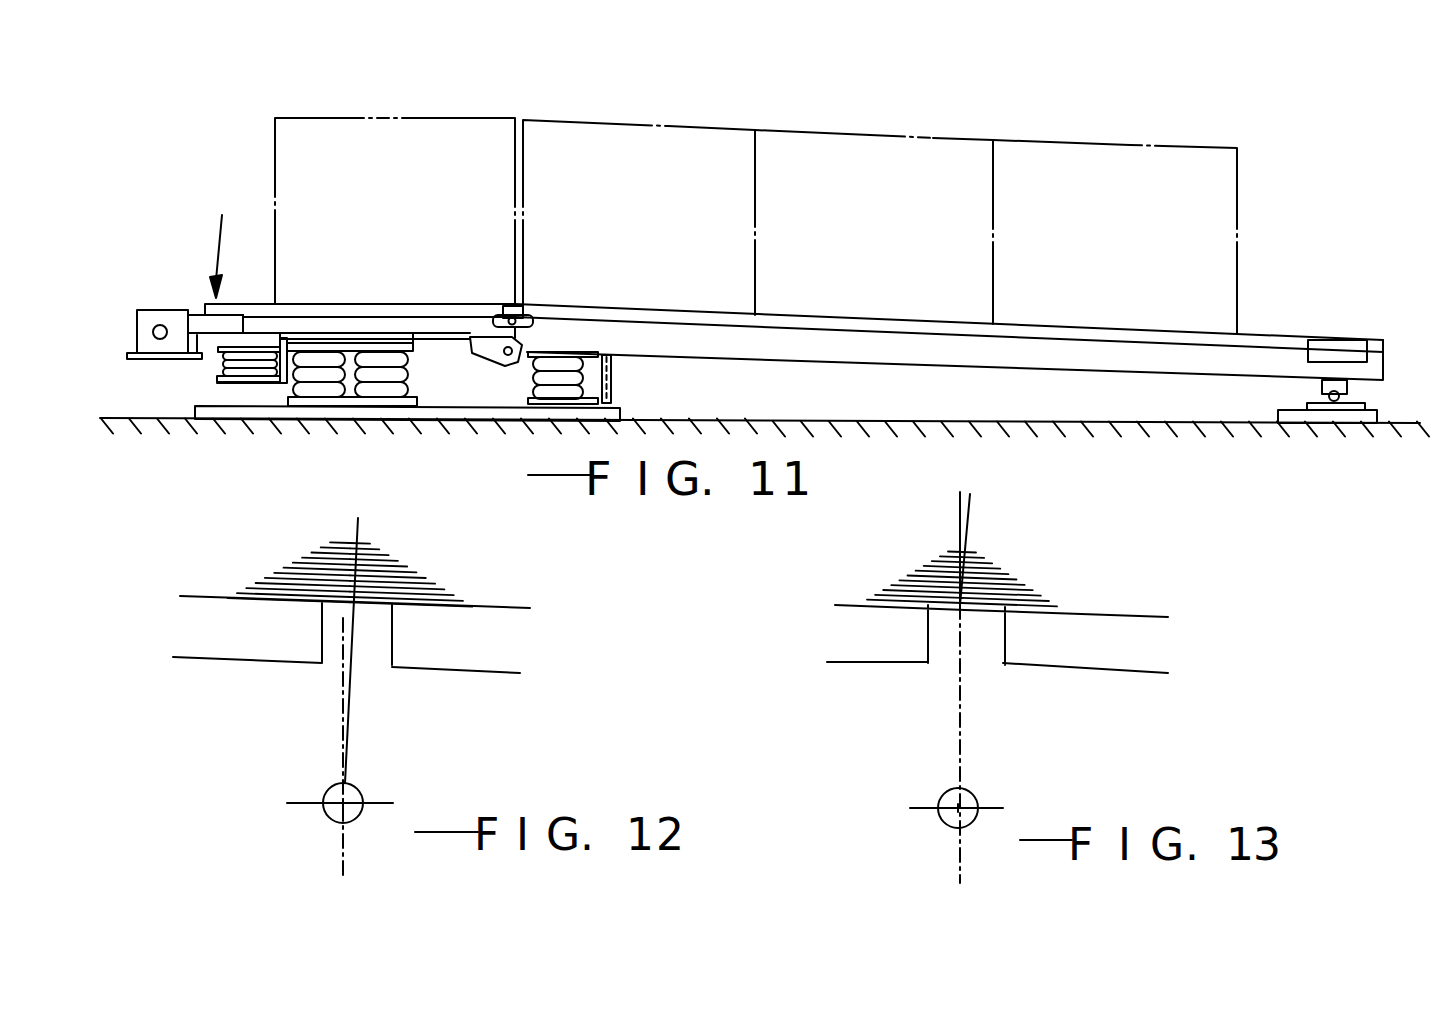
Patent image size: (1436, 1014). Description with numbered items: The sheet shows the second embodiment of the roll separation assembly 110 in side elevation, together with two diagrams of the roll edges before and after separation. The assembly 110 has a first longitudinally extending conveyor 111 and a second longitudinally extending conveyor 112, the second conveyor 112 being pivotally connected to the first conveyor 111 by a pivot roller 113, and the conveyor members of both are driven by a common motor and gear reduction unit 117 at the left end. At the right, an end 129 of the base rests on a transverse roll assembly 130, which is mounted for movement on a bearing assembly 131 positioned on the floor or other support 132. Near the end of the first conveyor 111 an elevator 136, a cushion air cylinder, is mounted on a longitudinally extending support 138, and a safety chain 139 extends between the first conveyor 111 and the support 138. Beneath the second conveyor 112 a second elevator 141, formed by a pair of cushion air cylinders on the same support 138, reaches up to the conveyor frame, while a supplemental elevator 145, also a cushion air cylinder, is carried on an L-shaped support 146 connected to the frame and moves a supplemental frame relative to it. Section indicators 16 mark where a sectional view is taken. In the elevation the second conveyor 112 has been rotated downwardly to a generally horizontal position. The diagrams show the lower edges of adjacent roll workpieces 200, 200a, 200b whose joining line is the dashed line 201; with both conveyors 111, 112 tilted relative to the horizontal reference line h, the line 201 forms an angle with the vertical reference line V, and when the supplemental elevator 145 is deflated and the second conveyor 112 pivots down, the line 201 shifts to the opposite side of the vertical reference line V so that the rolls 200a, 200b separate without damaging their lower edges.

In FIG. 11, the roll separation assembly 110 is at (808, 360).
In FIG. 11, the first longitudinally extending conveyor 111 is at (1046, 408).
In FIG. 12, the first longitudinally extending conveyor 111 is at (508, 608).
In FIG. 13, the first longitudinally extending conveyor 111 is at (1117, 673).
In FIG. 11, the second longitudinally extending conveyor 112 is at (412, 303).
In FIG. 12, the second longitudinally extending conveyor 112 is at (192, 594).
In FIG. 13, the second longitudinally extending conveyor 112 is at (863, 662).
In FIG. 11, the pivot roller 113 is at (515, 305).
In FIG. 11, the motor and gear reduction unit 117 is at (163, 307).
In FIG. 11, the end of the base 129 is at (1383, 350).
In FIG. 11, the transverse roll assembly 130 is at (1318, 387).
In FIG. 11, the bearing assembly 131 is at (1325, 423).
In FIG. 11, the floor or other support 132 is at (1137, 423).
In FIG. 11, the elevator 136 is at (528, 378).
In FIG. 11, the longitudinally extending support 138 is at (462, 425).
In FIG. 11, the safety chain 139 is at (612, 372).
In FIG. 11, the second elevator 141 is at (433, 382).
In FIG. 11, the supplemental elevator 145 is at (218, 362).
In FIG. 11, the L-shaped support 146 is at (238, 383).
In FIG. 11, the section line 16- 16 is at (285, 268).
In FIG. 11, the roll workpiece 200 is at (884, 133).
In FIG. 11, the roll workpiece 200a is at (648, 120).
In FIG. 12, the roll workpiece 200a is at (393, 567).
In FIG. 13, the roll workpiece 200a is at (1007, 580).
In FIG. 11, the roll workpiece 200b is at (344, 117).
In FIG. 12, the roll workpiece 200b is at (320, 562).
In FIG. 13, the roll workpiece 200b is at (930, 578).
In FIG. 12, the joining line 201 is at (350, 662).
In FIG. 13, the joining line 201 is at (958, 522).
In FIG. 12, the vertical reference line V is at (343, 670).
In FIG. 13, the vertical reference line V is at (975, 512).
In FIG. 12, the horizontal reference line h is at (385, 803).
In FIG. 13, the horizontal reference line h is at (990, 808).